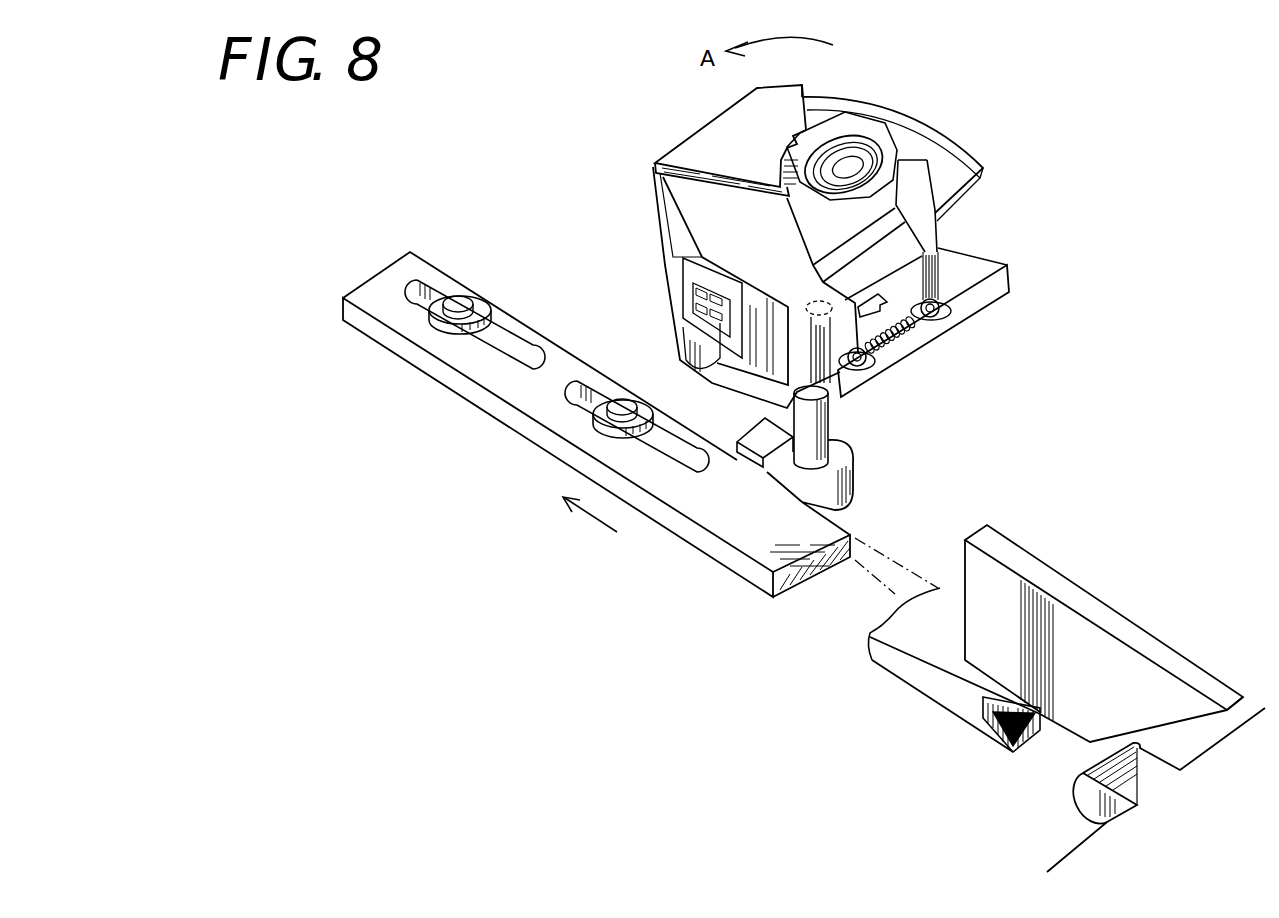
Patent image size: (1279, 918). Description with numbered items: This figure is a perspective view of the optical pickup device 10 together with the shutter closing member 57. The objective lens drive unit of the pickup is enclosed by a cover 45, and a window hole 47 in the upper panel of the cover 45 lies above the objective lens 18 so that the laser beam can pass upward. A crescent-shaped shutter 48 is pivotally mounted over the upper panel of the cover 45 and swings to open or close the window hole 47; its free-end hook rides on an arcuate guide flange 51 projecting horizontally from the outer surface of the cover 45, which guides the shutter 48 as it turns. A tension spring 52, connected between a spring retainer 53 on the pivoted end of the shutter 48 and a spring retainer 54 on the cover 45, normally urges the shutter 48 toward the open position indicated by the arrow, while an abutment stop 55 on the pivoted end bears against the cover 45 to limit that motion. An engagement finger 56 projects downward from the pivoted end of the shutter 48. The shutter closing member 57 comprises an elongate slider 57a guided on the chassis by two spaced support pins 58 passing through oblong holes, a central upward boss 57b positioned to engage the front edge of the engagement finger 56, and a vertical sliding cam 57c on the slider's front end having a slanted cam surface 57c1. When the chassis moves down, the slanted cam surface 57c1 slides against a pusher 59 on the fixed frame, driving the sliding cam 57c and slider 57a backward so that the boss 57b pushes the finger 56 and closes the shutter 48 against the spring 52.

The optical pickup device 10 is at (960, 102).
The objective lens 18 is at (848, 167).
The cover 45 is at (917, 235).
The window hole 47 is at (882, 150).
The shutter 48 is at (698, 147).
The arcuate guide flange 51 is at (962, 168).
The spring 52 is at (913, 336).
The spring retainer 53 is at (875, 353).
The spring retainer 54 is at (948, 314).
The abutment stop 55 is at (887, 300).
The engagement finger 56 is at (763, 430).
The shutter closing member 57 is at (665, 558).
The elongate slider 57a is at (513, 392).
The boss 57b is at (828, 430).
The vertical sliding cam 57c is at (1045, 572).
The slanted cam surface 57c1 is at (1185, 735).
The support pins 58 is at (458, 300).
The pusher 59 is at (1067, 781).